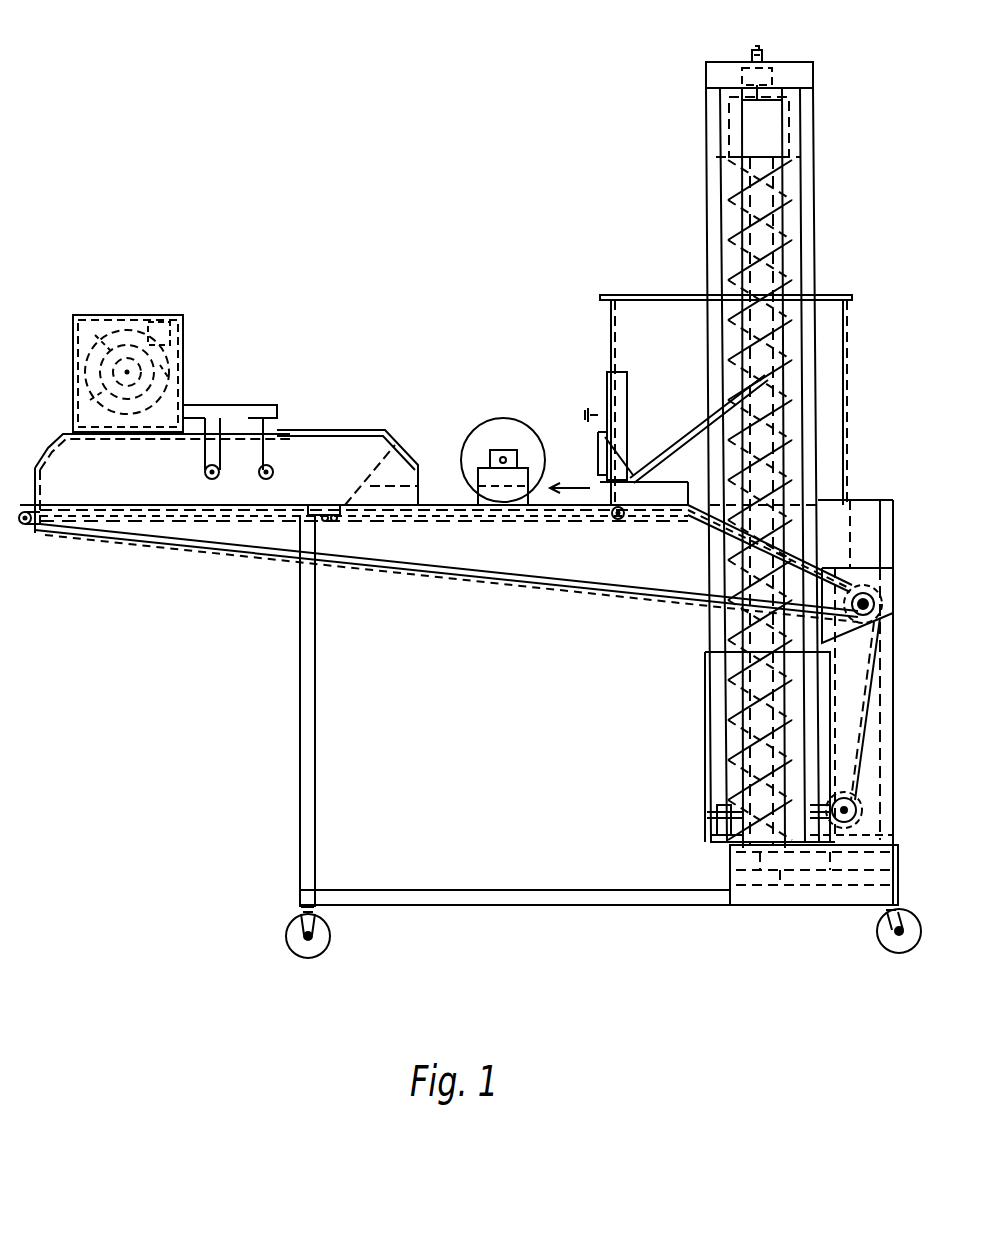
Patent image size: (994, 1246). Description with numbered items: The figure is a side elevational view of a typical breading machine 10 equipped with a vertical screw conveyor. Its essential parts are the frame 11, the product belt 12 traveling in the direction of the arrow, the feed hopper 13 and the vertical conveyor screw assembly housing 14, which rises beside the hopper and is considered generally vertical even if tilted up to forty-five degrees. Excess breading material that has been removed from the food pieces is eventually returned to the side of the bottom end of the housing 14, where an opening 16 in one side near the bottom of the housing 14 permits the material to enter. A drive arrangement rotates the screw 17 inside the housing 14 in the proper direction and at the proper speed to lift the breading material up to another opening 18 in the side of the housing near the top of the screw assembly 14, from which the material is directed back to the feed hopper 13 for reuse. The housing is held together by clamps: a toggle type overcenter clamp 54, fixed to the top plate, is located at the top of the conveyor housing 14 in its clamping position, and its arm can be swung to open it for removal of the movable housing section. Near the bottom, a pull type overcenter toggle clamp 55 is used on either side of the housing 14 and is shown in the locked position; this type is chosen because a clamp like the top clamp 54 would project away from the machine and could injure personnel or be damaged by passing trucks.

The breading machine 10 is at (292, 805).
The frame 11 is at (460, 895).
The product belt 12 is at (438, 505).
The feed hopper 13 is at (848, 362).
The vertical conveyor screw assembly housing 14 is at (818, 196).
The opening 16 is at (735, 780).
The screw 17 is at (797, 236).
The opening 18 is at (790, 128).
The toggle type overcenter clamp 54 is at (763, 50).
The pull type overcenter toggle clamp 55 is at (718, 815).